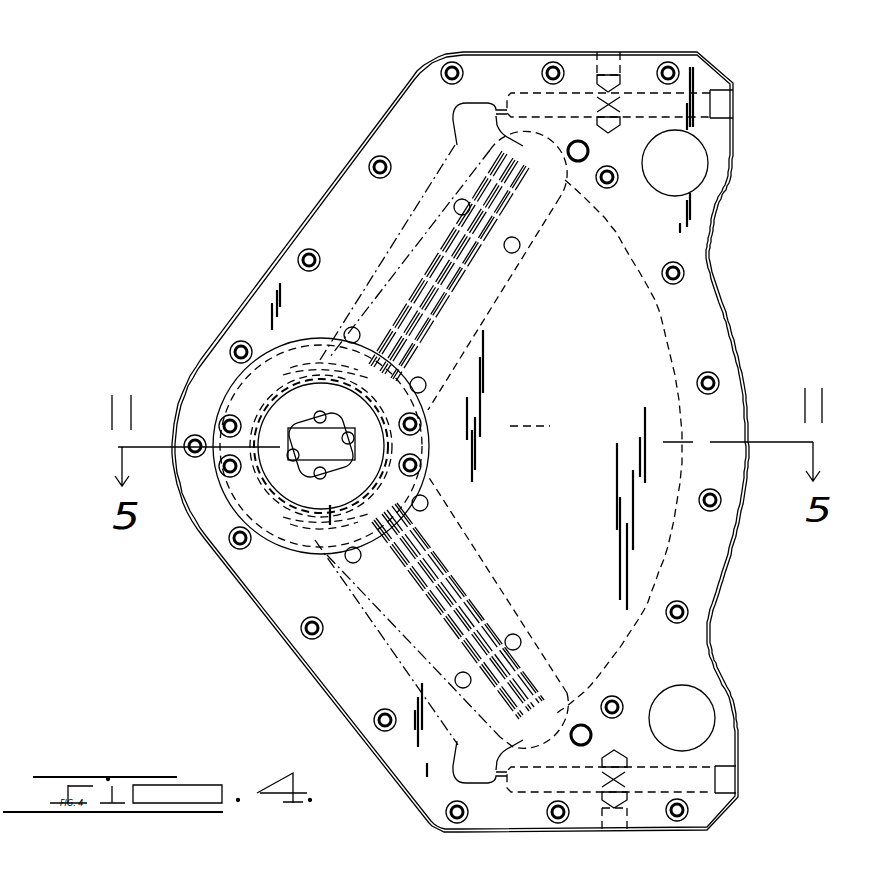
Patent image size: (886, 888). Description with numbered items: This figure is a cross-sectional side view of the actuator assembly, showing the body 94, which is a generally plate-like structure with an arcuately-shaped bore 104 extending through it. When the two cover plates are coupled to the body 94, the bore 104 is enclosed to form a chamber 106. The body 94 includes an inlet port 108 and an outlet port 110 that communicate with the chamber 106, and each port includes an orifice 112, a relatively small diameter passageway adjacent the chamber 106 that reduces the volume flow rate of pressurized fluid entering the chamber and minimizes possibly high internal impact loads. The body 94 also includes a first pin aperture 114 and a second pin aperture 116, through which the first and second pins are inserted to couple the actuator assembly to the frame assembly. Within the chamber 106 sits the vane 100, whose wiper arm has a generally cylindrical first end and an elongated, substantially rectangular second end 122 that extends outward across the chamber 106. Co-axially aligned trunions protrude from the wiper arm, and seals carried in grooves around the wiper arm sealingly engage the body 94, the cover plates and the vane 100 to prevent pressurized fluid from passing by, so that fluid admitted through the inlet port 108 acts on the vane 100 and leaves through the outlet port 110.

The body 94 is at (353, 215).
The vane 100 is at (490, 563).
The arcuately-shaped bore 104 is at (627, 247).
The chamber 106 is at (530, 412).
The inlet port 108 is at (718, 117).
The outlet port 110 is at (707, 765).
The orifice 112 is at (495, 117).
The first pin aperture 114 is at (702, 148).
The second pin aperture 116 is at (693, 690).
The second end 122 is at (512, 613).